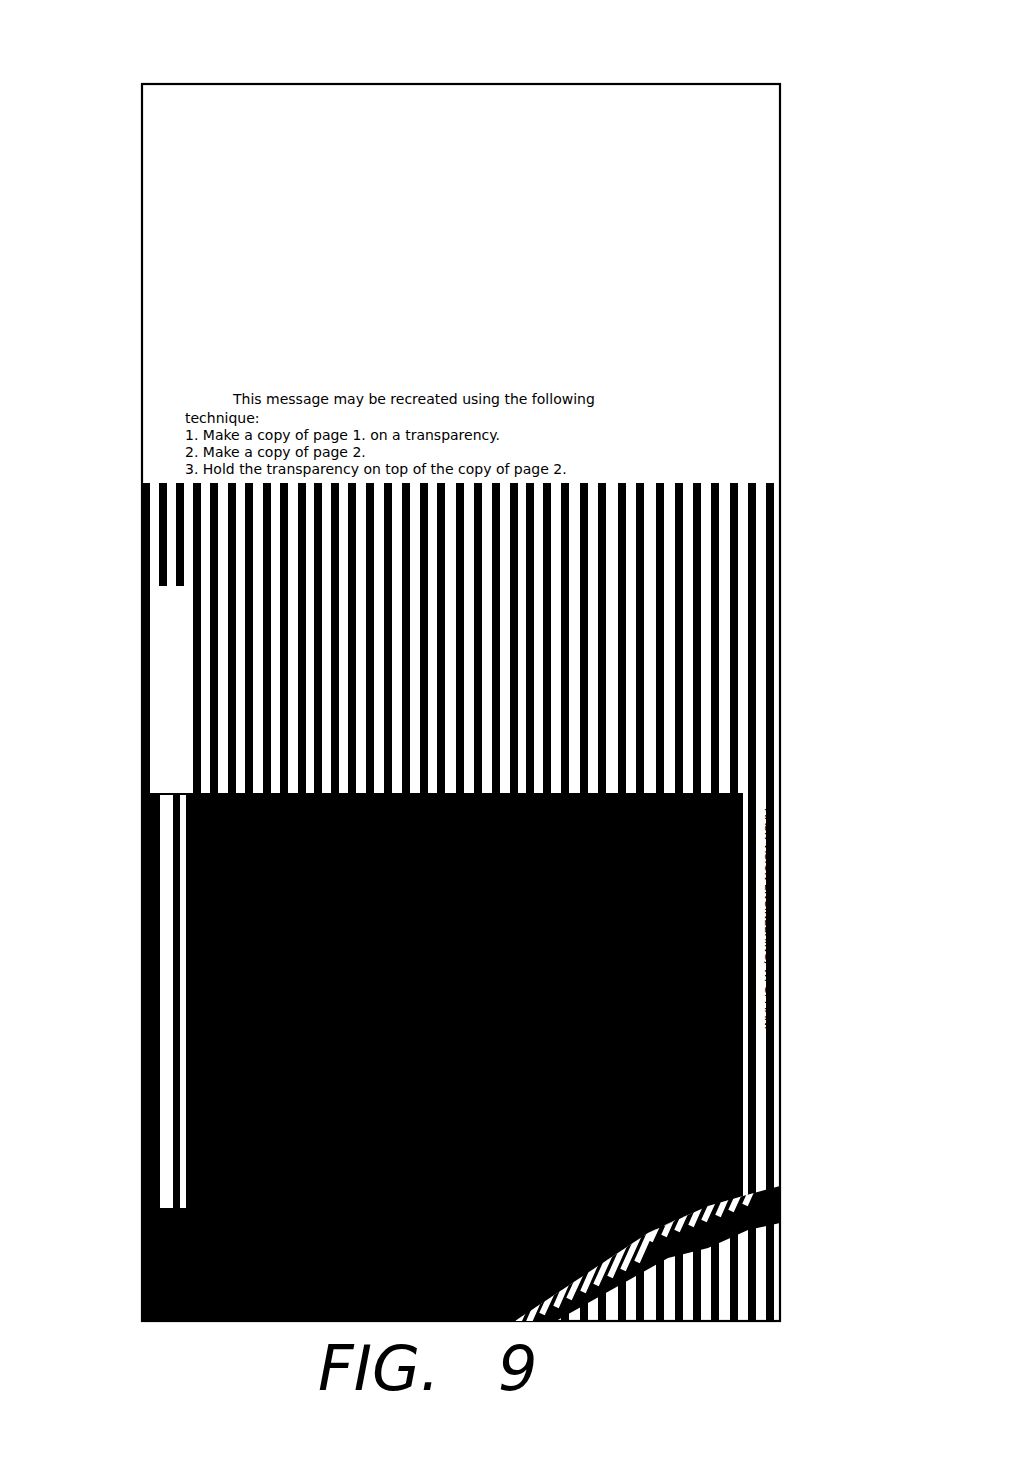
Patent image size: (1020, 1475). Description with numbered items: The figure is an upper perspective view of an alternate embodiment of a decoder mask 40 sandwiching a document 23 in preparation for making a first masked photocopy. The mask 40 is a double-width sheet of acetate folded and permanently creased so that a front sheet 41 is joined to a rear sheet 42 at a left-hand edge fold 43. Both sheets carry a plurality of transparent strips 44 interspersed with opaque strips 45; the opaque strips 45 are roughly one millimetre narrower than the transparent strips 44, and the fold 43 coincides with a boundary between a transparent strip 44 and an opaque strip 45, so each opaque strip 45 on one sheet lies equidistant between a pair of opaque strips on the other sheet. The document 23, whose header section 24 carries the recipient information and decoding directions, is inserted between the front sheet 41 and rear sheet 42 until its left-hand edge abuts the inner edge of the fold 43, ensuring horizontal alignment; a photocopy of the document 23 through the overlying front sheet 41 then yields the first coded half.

The document 23 is at (516, 76).
The header section 24 is at (122, 90).
The decoder mask 40 is at (792, 618).
The front sheet 41 is at (622, 1313).
The rear sheet 42 is at (776, 1272).
The left-hand edge fold 43 is at (137, 1280).
The transparent strips 44 is at (753, 475).
The opaque strips 45 is at (155, 475).